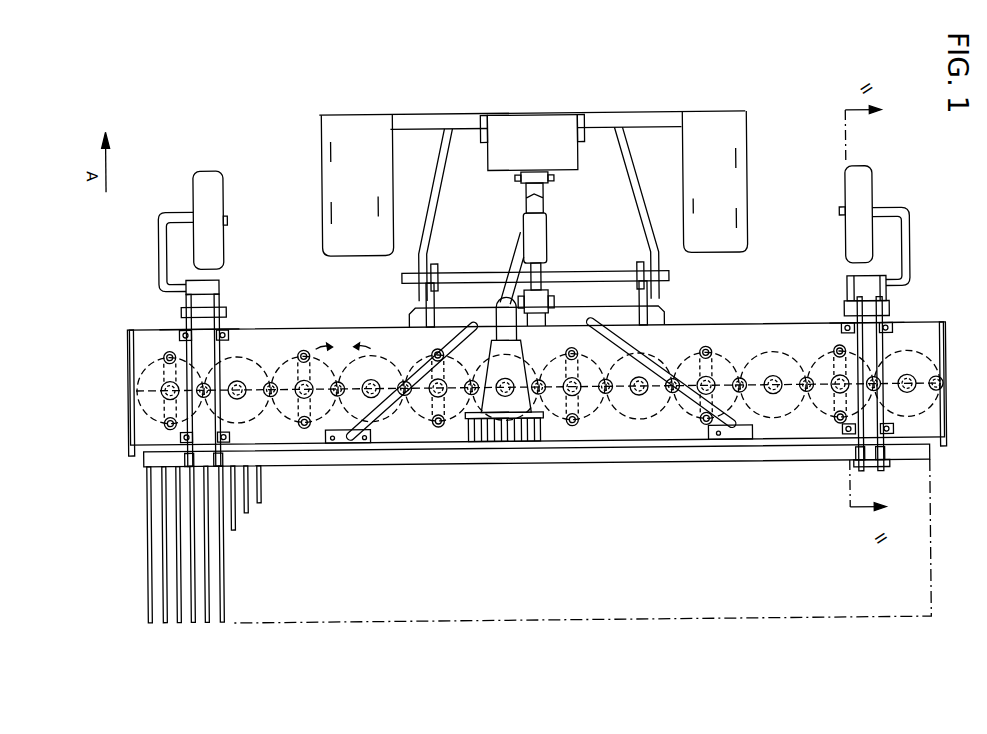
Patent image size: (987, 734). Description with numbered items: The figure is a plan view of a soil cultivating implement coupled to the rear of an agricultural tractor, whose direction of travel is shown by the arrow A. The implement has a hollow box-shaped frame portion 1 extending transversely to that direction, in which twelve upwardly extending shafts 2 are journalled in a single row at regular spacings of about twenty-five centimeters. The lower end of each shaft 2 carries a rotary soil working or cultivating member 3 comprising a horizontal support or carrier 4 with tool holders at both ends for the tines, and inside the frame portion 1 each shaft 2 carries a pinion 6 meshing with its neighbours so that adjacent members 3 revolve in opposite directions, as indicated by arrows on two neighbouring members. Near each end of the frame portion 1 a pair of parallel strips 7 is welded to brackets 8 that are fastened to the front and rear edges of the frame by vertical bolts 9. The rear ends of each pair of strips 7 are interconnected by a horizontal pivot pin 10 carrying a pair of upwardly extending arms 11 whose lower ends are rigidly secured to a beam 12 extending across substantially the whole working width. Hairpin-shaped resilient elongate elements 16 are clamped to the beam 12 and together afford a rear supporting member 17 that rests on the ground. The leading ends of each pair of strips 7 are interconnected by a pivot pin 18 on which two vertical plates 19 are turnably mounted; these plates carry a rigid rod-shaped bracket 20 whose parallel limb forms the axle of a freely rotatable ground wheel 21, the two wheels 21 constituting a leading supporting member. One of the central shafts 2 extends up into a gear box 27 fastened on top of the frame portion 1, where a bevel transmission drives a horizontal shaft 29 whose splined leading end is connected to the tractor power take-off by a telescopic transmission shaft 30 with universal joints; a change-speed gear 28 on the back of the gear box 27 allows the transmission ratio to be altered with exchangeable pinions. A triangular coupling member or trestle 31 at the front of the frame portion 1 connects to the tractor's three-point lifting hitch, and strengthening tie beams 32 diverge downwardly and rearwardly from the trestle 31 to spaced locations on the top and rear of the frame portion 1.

The hollow box-shaped frame portion 1 is at (788, 326).
The shafts 2 is at (161, 387).
The rotary soil working or cultivating member 3 is at (820, 410).
The support or carrier 4 is at (720, 351).
The pinion 6 is at (601, 401).
The strips 7 is at (170, 352).
The brackets 8 is at (227, 329).
The bolts 9 is at (181, 331).
The pivot pin 10 is at (262, 463).
The upwardly extending arms 11 is at (861, 465).
The beam 12 is at (633, 460).
The elongate elements 16 is at (222, 603).
The rear supporting member 17 is at (144, 583).
The pivot pin 18 is at (183, 315).
The plates 19 is at (189, 277).
The rod-shaped bracket 20 is at (161, 233).
The ground wheel 21 is at (226, 197).
The gear box 27 is at (522, 403).
The change-speed gear 28 is at (493, 437).
The shaft 29 is at (499, 309).
The telescopic transmission shaft 30 is at (522, 257).
The coupling member or trestle 31 is at (557, 309).
The strengthening tie beams 32 is at (387, 401).